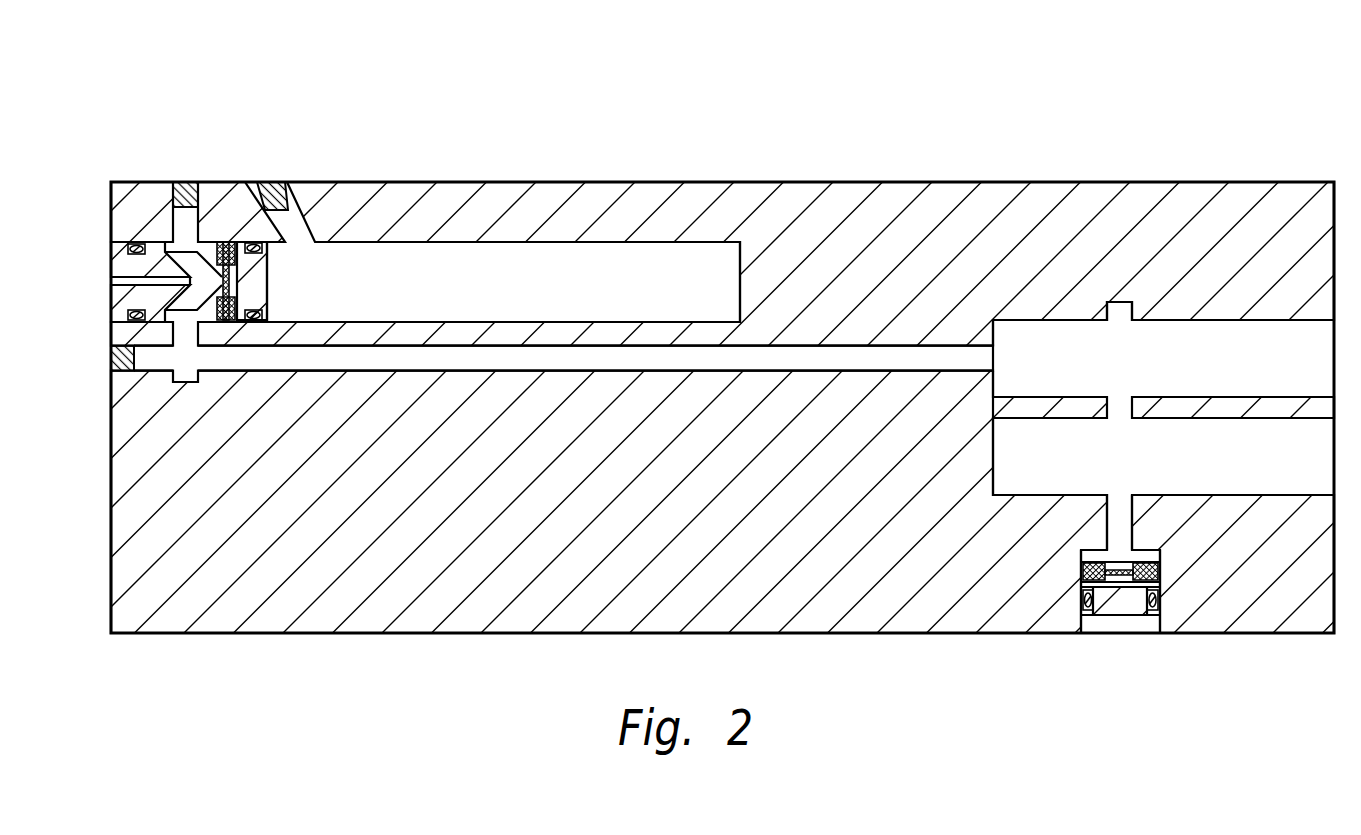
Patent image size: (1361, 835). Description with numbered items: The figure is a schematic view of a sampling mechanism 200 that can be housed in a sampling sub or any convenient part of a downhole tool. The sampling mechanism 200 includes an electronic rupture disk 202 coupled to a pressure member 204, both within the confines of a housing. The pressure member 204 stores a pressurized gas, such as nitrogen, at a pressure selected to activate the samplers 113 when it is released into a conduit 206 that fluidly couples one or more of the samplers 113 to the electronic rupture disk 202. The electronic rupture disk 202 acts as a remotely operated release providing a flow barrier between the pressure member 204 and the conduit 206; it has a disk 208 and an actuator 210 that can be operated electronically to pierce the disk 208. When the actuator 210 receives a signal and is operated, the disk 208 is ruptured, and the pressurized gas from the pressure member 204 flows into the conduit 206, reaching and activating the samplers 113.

The sampling mechanism 200 is at (1210, 76).
The electronic rupture disk 202 is at (110, 262).
The pressure member 204 is at (515, 268).
The conduit 206 is at (855, 357).
The disk 208 is at (228, 287).
The actuator 210 is at (205, 268).
The samplers 113 is at (1044, 335).